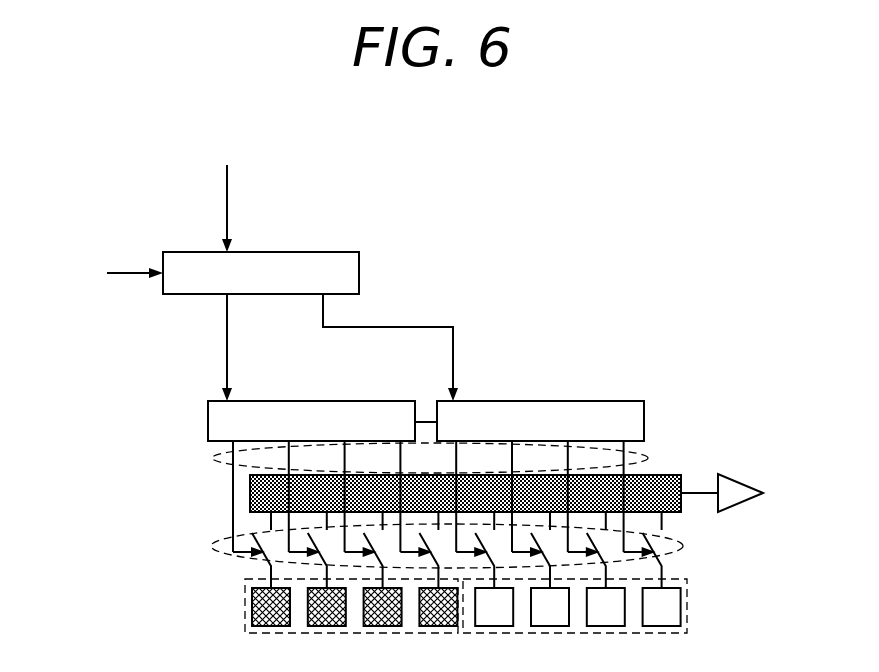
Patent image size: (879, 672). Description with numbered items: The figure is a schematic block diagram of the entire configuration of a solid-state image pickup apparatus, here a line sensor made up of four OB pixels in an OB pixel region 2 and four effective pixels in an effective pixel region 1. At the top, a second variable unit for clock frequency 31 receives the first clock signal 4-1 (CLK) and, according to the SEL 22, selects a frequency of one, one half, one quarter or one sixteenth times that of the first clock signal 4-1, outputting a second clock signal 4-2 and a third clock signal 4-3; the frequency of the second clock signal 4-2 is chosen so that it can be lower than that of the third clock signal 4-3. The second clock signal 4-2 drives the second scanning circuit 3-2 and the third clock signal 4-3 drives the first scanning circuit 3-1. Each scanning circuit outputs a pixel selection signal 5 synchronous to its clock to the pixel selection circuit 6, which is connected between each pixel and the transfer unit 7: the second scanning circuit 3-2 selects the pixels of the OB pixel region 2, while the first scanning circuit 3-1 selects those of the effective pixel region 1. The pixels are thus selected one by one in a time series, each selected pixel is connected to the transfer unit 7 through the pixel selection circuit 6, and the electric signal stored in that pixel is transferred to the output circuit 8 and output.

The effective pixel region 1 is at (687, 605).
The OB pixel region 2 is at (243, 603).
The first scanning circuit 3-1 is at (570, 401).
The second scanning circuit 3-2 is at (270, 401).
The first clock signal 4-1 is at (230, 187).
The second clock signal 4-2 is at (227, 348).
The third clock signal 4-3 is at (453, 327).
The pixel selection signal 5 is at (212, 458).
The pixel selection circuit 6 is at (212, 545).
The transfer unit 7 is at (670, 474).
The output circuit 8 is at (728, 474).
The SEL 22 is at (118, 270).
The second variable unit for clock frequency 31 is at (360, 273).